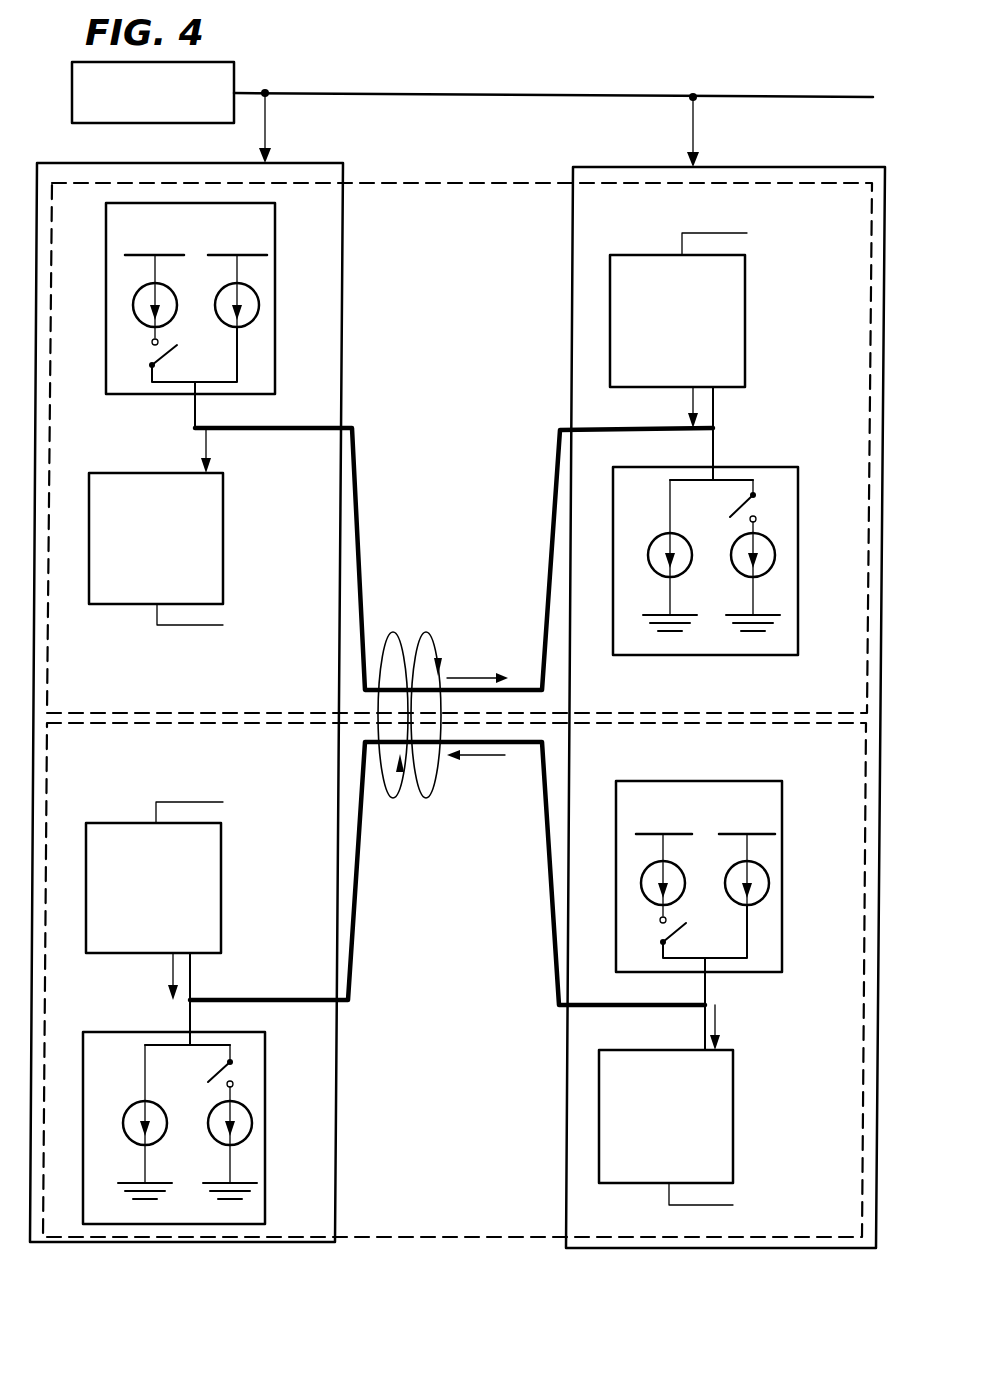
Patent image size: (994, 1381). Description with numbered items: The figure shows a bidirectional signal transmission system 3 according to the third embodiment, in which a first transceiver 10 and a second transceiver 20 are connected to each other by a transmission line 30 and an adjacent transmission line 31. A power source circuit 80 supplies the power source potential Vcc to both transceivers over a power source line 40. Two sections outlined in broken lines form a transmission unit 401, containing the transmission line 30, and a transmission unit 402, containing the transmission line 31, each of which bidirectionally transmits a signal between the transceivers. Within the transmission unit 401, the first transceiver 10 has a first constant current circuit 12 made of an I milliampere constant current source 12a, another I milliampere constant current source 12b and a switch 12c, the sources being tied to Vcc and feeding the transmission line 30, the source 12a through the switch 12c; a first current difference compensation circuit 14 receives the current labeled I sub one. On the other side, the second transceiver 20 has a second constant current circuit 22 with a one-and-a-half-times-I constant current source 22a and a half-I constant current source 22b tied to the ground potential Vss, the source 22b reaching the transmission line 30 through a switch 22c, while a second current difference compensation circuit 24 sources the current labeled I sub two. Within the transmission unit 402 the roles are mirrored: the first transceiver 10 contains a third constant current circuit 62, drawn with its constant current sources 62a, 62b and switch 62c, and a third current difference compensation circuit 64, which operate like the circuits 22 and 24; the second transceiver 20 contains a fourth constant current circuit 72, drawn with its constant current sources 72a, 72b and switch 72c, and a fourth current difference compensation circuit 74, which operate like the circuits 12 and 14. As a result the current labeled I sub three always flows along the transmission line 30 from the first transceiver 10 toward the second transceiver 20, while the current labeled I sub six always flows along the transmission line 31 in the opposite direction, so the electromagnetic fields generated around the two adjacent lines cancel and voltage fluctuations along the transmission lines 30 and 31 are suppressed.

The bidirectional signal transmission system 3 is at (377, 1262).
The power source circuit 80 is at (237, 78).
The power source line 40 is at (483, 94).
The first transceiver 10 is at (345, 168).
The second transceiver 20 is at (573, 178).
The transmission unit 401 is at (786, 188).
The transmission unit 402 is at (780, 1240).
The first constant current circuit 12 is at (191, 308).
The constant current source 12a is at (134, 308).
The constant current source 12b is at (259, 306).
The switch 12c is at (177, 347).
The first current difference compensation circuit 14 is at (223, 525).
The transmission line 30 is at (510, 690).
The transmission line 31 is at (517, 745).
The second current difference compensation circuit 24 is at (745, 310).
The second constant current circuit 22 is at (736, 580).
The constant current source 22a is at (652, 542).
The constant current source 22b is at (775, 555).
The switch 22c is at (740, 500).
The fourth constant current circuit 72 is at (706, 889).
The first current source 72a is at (640, 883).
The second current source 72b is at (769, 883).
The switch 72c is at (686, 925).
The fourth current difference compensation circuit 74 is at (733, 1103).
The third current difference compensation circuit 64 is at (221, 876).
The third constant current circuit 62 is at (204, 1113).
The current source (1.5*I) 62a is at (128, 1108).
The current source (0.5*I) 62b is at (252, 1123).
The switch 62c is at (226, 1060).